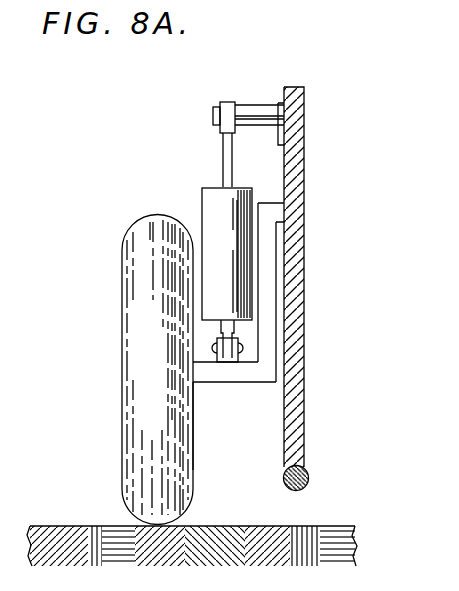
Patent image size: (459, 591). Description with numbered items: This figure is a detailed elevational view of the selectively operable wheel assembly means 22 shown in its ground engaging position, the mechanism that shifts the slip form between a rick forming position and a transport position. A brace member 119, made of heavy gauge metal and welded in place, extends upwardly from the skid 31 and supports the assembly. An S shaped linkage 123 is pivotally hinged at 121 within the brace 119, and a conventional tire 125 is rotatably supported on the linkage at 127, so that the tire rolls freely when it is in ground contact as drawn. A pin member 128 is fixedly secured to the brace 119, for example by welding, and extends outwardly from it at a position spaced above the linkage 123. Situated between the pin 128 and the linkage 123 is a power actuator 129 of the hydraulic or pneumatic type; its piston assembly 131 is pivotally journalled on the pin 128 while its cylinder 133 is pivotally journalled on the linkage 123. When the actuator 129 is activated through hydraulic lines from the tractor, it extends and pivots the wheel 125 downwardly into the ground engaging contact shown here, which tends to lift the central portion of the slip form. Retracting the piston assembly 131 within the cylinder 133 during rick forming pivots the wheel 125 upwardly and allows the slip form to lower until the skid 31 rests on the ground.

The wheel assembly means 22 is at (124, 334).
The skid 31 is at (308, 474).
The brace member 119 is at (283, 402).
The pivot hinge 121 is at (277, 212).
The S shaped linkage 123 is at (250, 372).
The tire 125 is at (140, 345).
The tire support 127 is at (193, 387).
The pin member 128 is at (257, 110).
The power actuator 129 is at (213, 177).
The piston assembly 131 is at (230, 157).
The cylinder 133 is at (237, 205).